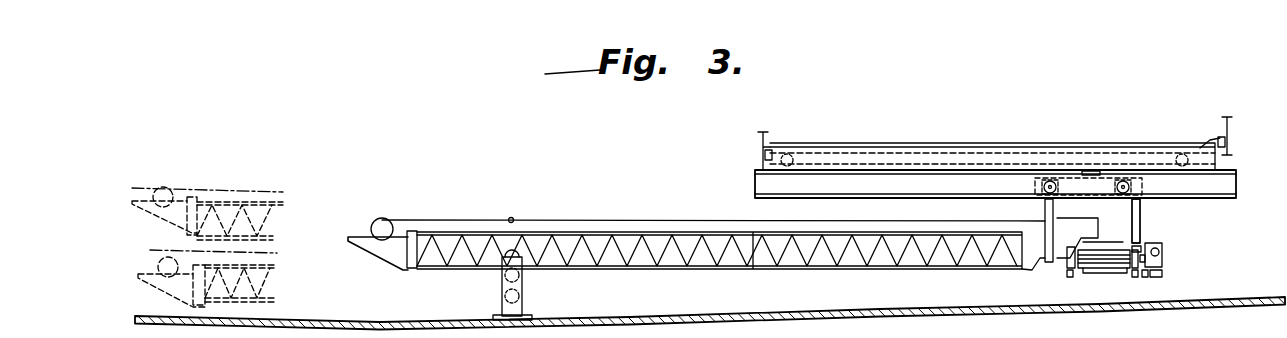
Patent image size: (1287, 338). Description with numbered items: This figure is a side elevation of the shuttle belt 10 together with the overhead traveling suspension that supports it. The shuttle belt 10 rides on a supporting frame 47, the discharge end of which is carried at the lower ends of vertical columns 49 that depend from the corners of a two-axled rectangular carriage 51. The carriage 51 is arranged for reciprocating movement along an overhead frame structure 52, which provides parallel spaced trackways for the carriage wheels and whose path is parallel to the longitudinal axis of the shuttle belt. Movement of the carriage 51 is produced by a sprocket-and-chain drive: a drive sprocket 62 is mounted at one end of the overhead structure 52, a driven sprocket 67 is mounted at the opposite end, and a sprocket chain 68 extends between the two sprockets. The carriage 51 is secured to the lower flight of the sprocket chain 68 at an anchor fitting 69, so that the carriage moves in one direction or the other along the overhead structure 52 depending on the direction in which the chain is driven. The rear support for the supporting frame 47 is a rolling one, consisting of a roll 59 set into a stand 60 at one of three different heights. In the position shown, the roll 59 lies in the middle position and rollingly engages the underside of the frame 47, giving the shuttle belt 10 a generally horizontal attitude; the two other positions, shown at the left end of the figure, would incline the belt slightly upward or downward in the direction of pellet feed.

The shuttle belt 10 is at (665, 208).
The supporting frame 47 is at (646, 269).
The roll 59 is at (502, 281).
The stand 60 is at (523, 291).
The overhead frame structure 52 is at (1222, 187).
The carriage 51 is at (1103, 190).
The vertical columns 49 is at (1139, 221).
The sprocket chain 68 is at (912, 147).
The driven sprocket 67 is at (787, 153).
The drive sprocket 62 is at (1172, 146).
The anchor fitting 69 is at (1088, 172).